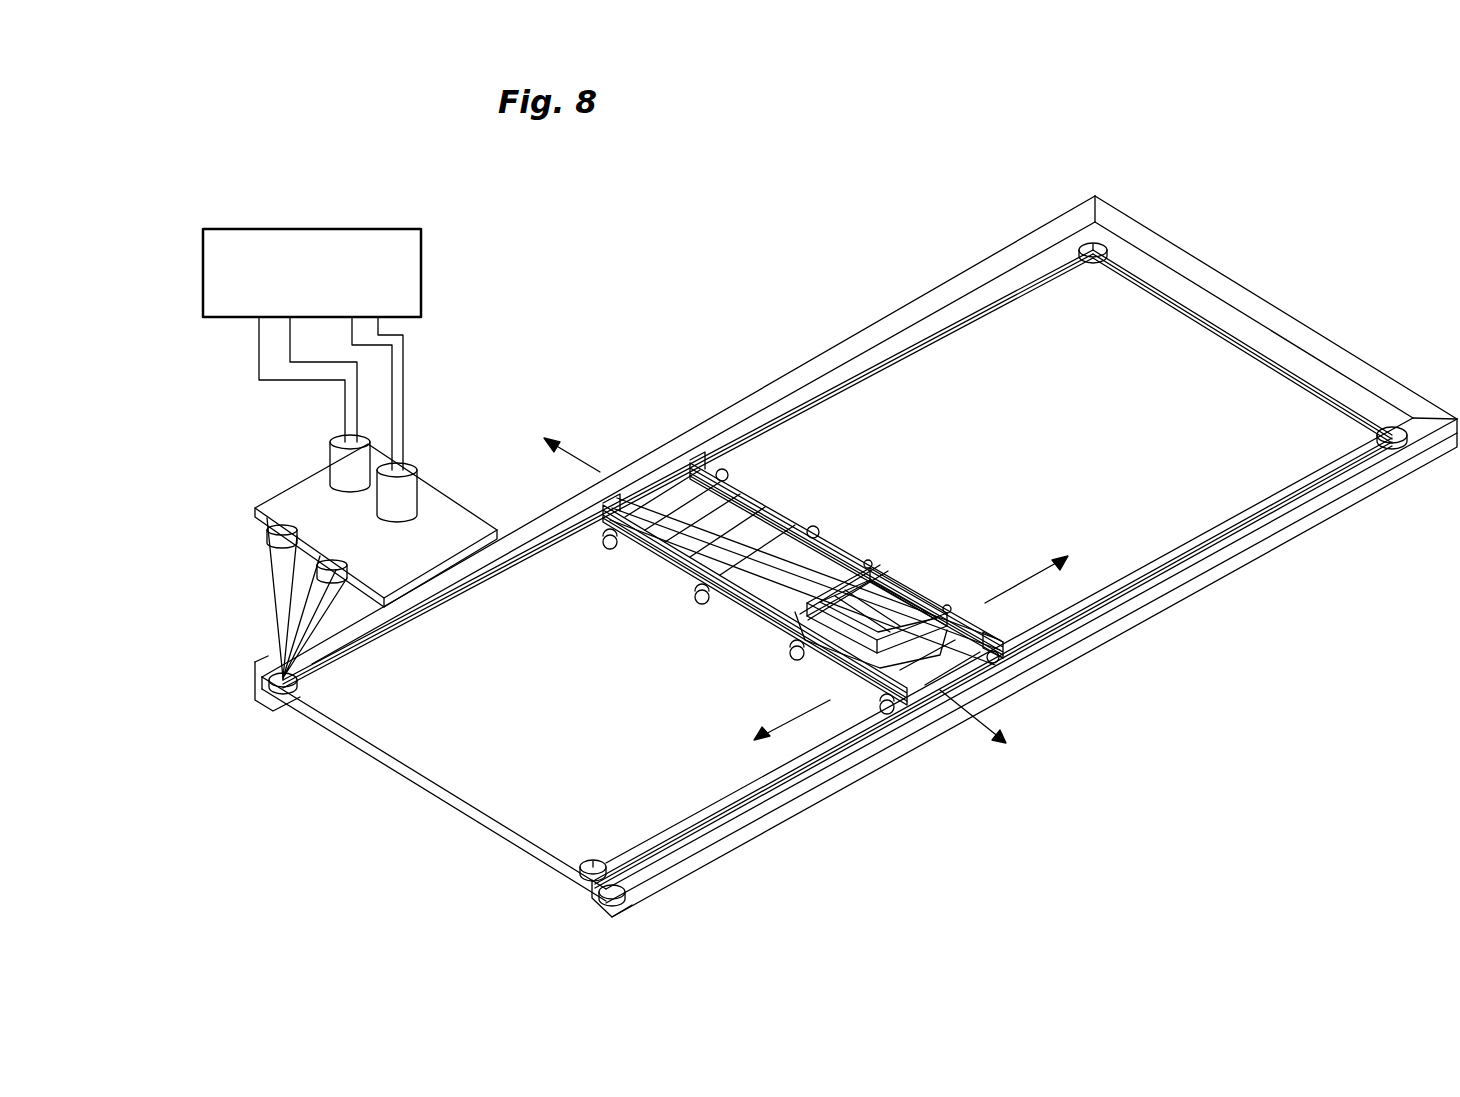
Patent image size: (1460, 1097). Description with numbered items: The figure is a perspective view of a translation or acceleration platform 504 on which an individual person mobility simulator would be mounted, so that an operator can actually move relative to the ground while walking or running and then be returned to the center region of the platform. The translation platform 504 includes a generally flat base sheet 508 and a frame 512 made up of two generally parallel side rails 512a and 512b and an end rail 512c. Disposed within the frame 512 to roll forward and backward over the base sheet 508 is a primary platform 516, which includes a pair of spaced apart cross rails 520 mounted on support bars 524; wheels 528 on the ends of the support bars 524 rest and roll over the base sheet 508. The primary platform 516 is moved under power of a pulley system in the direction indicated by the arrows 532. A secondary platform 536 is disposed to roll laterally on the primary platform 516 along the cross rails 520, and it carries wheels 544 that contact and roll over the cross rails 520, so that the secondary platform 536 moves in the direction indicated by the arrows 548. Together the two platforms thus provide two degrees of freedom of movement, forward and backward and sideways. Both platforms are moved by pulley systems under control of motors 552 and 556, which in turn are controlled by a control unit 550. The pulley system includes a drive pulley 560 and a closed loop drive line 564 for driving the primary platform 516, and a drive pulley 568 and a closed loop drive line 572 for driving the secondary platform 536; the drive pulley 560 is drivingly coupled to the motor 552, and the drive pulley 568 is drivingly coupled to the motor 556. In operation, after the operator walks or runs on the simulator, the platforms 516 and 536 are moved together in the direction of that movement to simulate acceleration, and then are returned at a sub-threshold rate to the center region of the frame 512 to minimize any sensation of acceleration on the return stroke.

The translation platform 504 is at (787, 539).
The base sheet 508 is at (1245, 407).
The frame 512 is at (859, 539).
The side rail 512a is at (760, 382).
The side rail 512b is at (1290, 545).
The end rail 512c is at (1165, 262).
The primary platform 516 is at (846, 598).
The cross rails 520 is at (780, 490).
The support bars 524 is at (840, 560).
The wheels 528 is at (612, 557).
The arrows 532 is at (1020, 655).
The secondary platform 536 is at (898, 570).
The wheels 544 is at (790, 644).
The arrows 548 is at (575, 455).
The control unit 550 is at (312, 229).
The motor 552 is at (350, 469).
The motor 556 is at (415, 481).
The drive pulley 560 is at (270, 535).
The closed loop drive line 564 is at (270, 580).
The drive pulley 568 is at (330, 562).
The closed loop drive line 572 is at (300, 600).